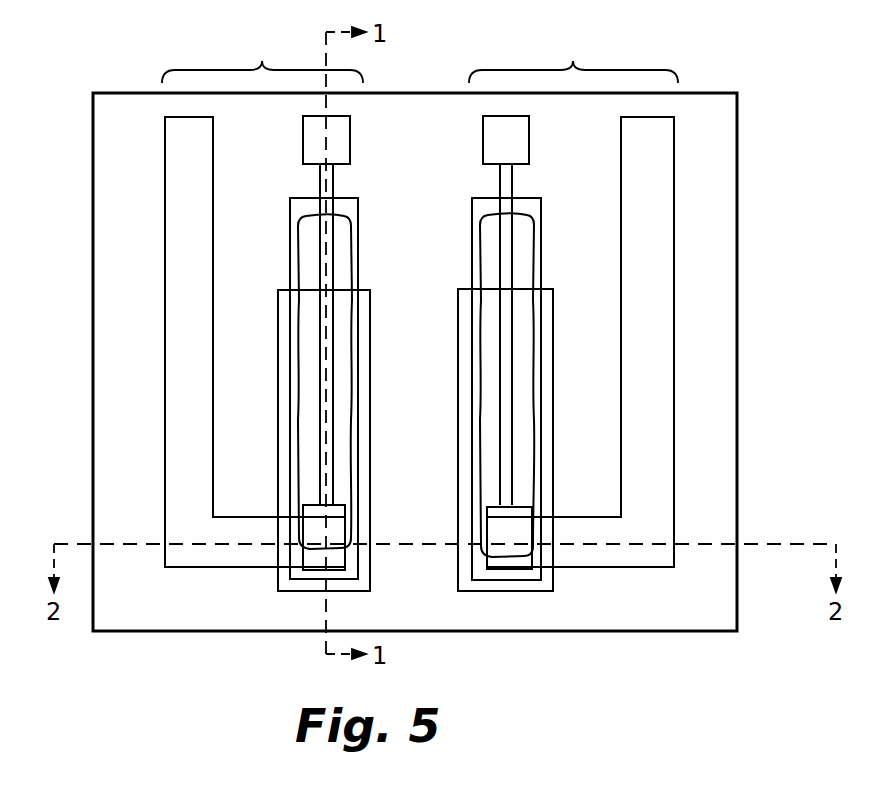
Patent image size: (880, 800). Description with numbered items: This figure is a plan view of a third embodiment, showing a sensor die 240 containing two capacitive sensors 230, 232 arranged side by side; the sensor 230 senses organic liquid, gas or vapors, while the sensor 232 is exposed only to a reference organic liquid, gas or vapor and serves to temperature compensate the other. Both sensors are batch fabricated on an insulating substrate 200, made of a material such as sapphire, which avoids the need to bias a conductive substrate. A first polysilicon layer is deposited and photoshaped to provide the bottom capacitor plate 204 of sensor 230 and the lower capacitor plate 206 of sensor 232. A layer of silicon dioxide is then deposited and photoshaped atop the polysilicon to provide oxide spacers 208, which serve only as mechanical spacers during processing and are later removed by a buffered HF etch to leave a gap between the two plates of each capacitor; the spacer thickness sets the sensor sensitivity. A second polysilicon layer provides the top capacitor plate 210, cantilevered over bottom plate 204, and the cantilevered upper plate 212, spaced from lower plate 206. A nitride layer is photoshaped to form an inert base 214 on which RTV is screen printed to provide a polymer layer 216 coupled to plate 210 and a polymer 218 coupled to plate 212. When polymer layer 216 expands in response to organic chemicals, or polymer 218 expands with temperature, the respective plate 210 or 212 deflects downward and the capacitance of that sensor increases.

The insulating substrate 200 is at (459, 362).
The bottom capacitor plate 204 is at (611, 342).
The lower capacitor plate 206 is at (224, 342).
The oxide spacer 208 is at (420, 440).
The top capacitor plate 210 is at (544, 342).
The cantilevered upper plate 212 is at (366, 343).
The inert base 214 is at (451, 387).
The polymer layer 216 is at (546, 386).
The polymer 218 is at (292, 379).
The capacitive sensor 230 is at (573, 51).
The capacitive sensor 232 is at (262, 51).
The silicon sensor die 240 is at (140, 273).